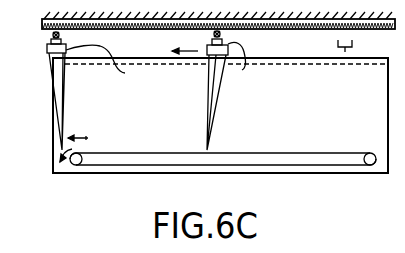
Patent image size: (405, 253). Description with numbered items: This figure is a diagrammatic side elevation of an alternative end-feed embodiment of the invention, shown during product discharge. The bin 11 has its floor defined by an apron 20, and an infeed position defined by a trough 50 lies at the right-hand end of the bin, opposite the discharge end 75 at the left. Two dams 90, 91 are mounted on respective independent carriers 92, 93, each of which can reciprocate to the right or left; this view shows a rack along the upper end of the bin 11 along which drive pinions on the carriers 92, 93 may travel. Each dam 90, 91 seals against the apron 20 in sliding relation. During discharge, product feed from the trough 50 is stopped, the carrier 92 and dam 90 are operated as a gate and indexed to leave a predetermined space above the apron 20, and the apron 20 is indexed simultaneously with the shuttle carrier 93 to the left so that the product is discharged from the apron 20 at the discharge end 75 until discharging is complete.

The bin 11 is at (292, 60).
The apron 20 is at (275, 151).
The trough (product infeed) 50 is at (345, 52).
The discharge end 75 is at (52, 152).
The dam 90 is at (130, 86).
The dam 91 is at (206, 97).
The carrier 92 is at (110, 65).
The carrier (shuttle) 93 is at (248, 64).